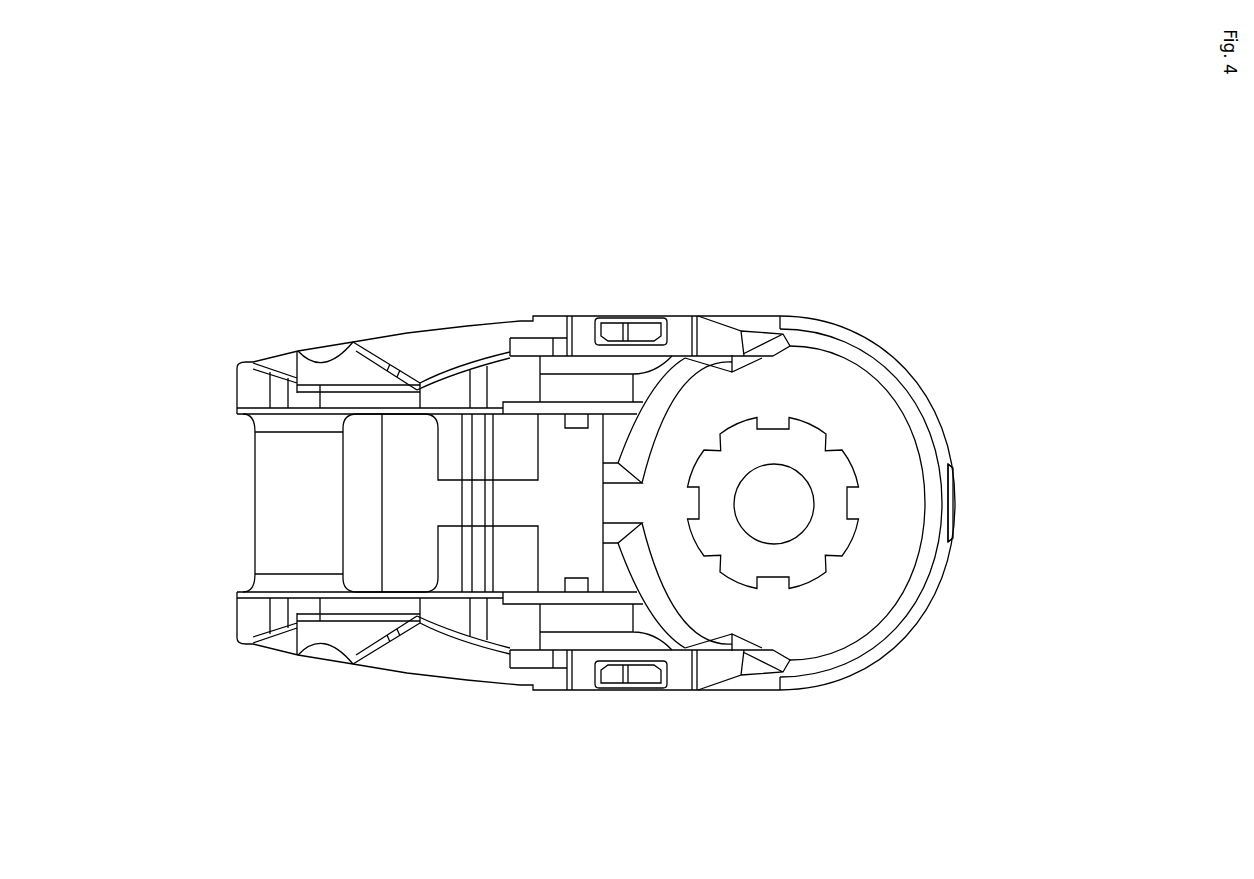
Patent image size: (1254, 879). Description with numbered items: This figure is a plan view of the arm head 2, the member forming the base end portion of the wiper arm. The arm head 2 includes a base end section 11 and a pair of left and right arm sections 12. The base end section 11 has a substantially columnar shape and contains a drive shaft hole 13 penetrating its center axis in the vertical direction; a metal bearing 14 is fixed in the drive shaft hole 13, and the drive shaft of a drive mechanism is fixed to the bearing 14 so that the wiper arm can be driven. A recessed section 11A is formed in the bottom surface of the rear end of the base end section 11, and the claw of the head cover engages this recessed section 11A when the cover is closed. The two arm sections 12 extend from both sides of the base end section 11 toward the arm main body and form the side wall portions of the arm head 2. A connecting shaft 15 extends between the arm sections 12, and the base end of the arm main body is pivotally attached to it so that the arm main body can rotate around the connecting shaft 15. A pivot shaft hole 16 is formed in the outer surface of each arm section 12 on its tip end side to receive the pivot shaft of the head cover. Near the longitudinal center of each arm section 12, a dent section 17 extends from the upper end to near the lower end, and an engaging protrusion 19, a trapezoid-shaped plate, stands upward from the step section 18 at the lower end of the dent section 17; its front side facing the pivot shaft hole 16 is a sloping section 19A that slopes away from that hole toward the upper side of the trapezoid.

The arm head 2 is at (797, 286).
The base end section 11 is at (946, 424).
The recessed section 11A is at (956, 510).
The arm section 12 is at (432, 324).
The drive shaft hole 13 is at (821, 447).
The bearing 14 is at (818, 445).
The connecting shaft 15 is at (255, 497).
The pivot shaft hole 16 is at (327, 350).
The dent section 17 is at (718, 333).
The step section 18 is at (581, 332).
The engaging protrusion 19 is at (644, 327).
The sloping section 19A is at (616, 327).